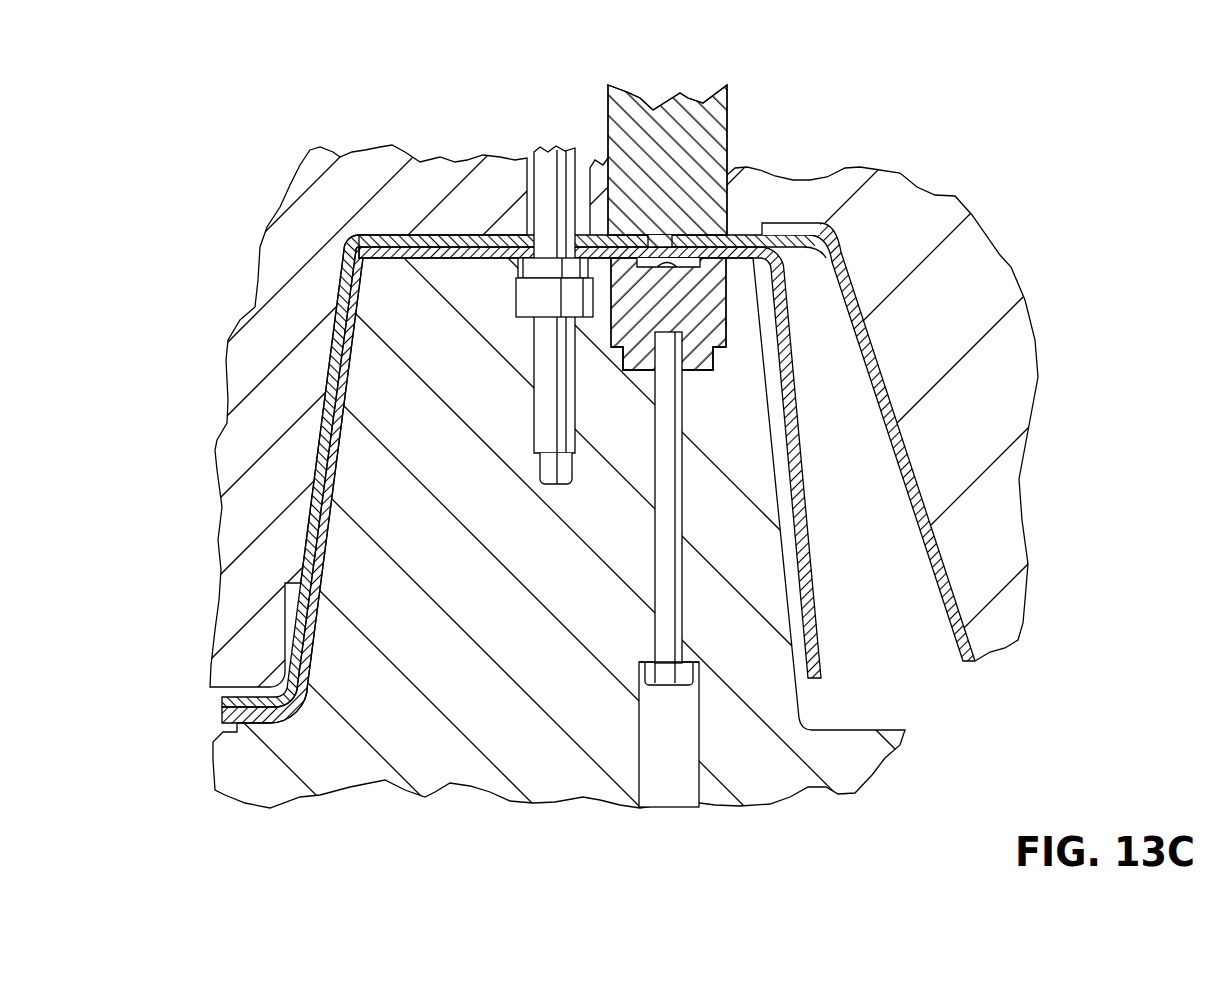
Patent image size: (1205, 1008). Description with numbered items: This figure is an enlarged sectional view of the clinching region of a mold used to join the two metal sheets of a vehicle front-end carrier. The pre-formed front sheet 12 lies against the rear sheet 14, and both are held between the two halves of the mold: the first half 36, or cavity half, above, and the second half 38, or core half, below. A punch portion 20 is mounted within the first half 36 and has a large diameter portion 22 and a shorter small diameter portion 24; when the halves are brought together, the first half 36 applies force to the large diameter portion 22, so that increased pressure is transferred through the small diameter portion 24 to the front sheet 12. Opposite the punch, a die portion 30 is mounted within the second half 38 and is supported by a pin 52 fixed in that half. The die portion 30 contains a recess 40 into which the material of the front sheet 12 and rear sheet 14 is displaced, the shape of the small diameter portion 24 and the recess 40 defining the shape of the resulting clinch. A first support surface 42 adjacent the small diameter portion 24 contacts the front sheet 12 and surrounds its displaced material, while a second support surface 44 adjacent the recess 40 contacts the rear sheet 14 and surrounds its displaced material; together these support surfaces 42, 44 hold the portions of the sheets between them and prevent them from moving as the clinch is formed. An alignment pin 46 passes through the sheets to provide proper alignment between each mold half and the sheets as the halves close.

The front sheet 12 is at (893, 428).
The rear sheet 14 is at (810, 563).
The punch portion 20 is at (701, 271).
The large diameter portion 22 is at (707, 127).
The small diameter portion 24 is at (683, 257).
The die portion 30 is at (647, 345).
The first half 36 is at (968, 271).
The second half 38 is at (380, 482).
The recess 40 is at (658, 265).
The first support surface 42 is at (725, 258).
The second support surface 44 is at (620, 245).
The alignment pin 46 is at (547, 185).
The pin 52 is at (660, 582).